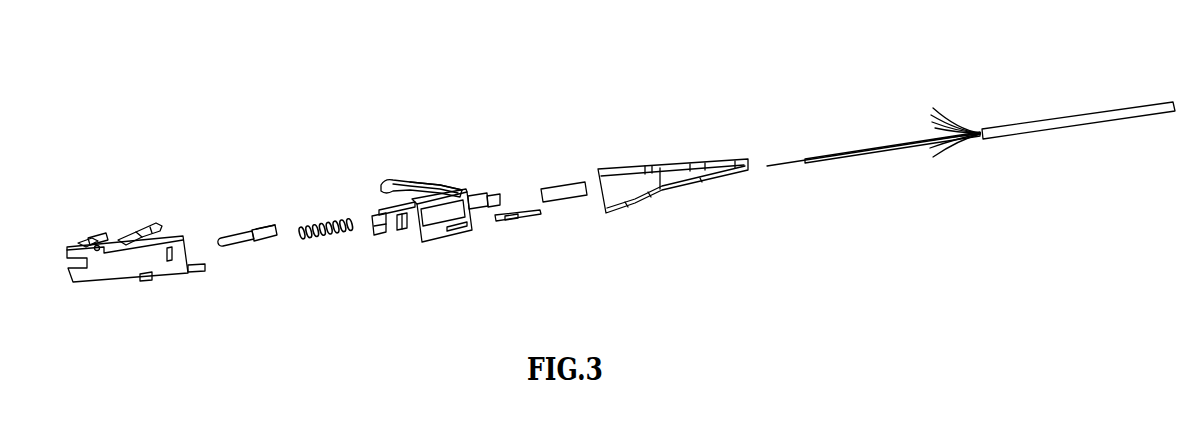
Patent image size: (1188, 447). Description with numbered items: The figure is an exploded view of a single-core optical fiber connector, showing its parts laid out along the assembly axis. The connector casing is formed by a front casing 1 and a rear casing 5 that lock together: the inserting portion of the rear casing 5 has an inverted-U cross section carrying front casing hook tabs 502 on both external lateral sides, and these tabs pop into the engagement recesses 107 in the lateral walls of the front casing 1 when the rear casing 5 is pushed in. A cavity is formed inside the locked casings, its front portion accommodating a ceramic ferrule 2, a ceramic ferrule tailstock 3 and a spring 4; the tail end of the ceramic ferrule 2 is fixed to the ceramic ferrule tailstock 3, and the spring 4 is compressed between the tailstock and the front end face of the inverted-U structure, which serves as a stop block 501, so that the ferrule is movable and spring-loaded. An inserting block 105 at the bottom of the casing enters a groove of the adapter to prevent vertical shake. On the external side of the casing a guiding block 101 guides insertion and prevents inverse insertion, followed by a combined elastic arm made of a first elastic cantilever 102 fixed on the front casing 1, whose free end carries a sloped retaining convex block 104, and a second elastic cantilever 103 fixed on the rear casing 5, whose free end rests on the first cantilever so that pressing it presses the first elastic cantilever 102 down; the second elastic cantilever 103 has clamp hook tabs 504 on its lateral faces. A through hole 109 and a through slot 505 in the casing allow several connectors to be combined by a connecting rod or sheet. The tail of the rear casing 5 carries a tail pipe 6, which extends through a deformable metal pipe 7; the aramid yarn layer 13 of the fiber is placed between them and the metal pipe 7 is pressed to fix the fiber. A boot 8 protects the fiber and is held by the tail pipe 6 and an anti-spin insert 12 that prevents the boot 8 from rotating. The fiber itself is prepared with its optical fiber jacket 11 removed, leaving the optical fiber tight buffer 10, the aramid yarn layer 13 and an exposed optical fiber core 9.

The front casing 1 is at (127, 267).
The guiding block 101 is at (100, 232).
The first elastic cantilever 102 is at (157, 222).
The retaining convex block 104 is at (133, 223).
The inserting block 105 is at (147, 280).
The engagement recesses 107 is at (170, 260).
The through hole 109 is at (82, 242).
The ceramic ferrule 2 is at (232, 235).
The ceramic ferrule tailstock 3 is at (265, 230).
The spring 4 is at (328, 235).
The rear casing 5 is at (438, 230).
The stop block 501 is at (378, 212).
The front casing hook tabs 502 is at (398, 228).
The clamp hook tabs 504 is at (413, 185).
The through slot 505 is at (467, 233).
The second elastic cantilever 103 is at (385, 182).
The tail pipe 6 is at (493, 200).
The metal pipe 7 is at (560, 190).
The boot 8 is at (648, 180).
The optical fiber core 9 is at (790, 160).
The optical fiber tight buffer 10 is at (883, 148).
The optical fiber jacket 11 is at (1005, 128).
The anti-spin insert 12 is at (520, 220).
The aramid yarn layer 13 is at (958, 125).